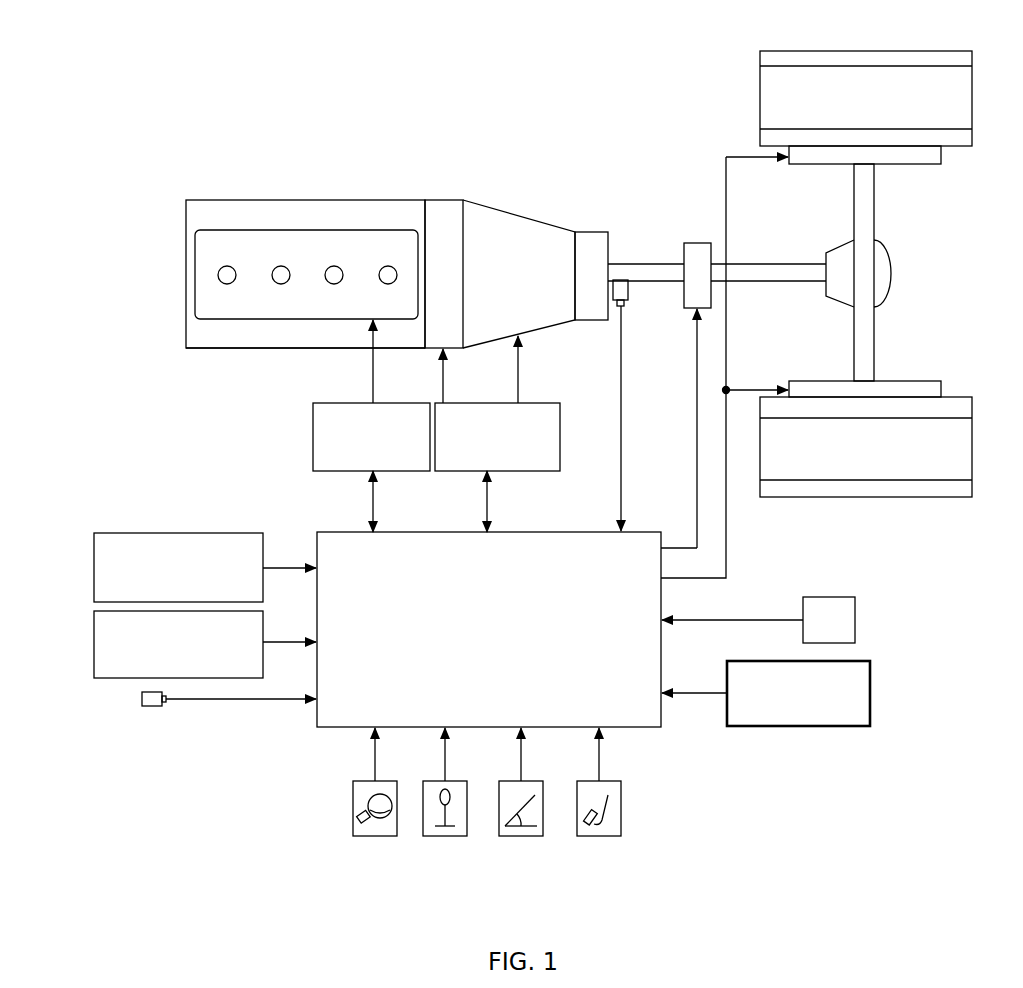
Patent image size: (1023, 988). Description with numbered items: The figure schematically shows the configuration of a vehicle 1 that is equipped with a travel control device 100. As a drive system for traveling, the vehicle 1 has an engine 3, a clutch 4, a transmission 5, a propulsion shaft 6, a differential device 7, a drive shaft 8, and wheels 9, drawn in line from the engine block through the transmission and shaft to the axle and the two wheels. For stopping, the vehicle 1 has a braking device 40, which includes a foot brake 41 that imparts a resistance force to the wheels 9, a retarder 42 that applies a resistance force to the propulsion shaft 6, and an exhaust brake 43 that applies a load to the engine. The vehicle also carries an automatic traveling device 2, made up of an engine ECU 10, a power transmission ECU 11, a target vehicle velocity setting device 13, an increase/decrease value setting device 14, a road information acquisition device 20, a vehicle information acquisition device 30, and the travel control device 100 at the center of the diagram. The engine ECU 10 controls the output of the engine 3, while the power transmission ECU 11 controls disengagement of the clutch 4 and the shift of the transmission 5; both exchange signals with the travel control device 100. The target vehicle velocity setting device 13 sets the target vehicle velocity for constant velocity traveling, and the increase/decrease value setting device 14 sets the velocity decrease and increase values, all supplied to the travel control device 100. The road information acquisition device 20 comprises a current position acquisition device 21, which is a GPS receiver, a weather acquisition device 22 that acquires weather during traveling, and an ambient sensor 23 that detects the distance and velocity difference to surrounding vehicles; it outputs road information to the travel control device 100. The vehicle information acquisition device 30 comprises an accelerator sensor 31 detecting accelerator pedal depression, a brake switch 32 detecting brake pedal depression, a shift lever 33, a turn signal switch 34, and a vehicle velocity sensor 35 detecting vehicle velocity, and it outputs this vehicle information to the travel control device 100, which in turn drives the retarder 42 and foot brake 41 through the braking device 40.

The vehicle 1 is at (183, 178).
The automatic traveling device 2 is at (638, 741).
The engine 3 is at (311, 200).
The clutch 4 is at (445, 200).
The transmission 5 is at (524, 216).
The propulsion shaft 6 is at (764, 264).
The differential device 7 is at (892, 273).
The drive shaft 8 is at (876, 195).
The wheels 9 is at (956, 397).
The engine ECU 10 is at (313, 440).
The power transmission ECU 11 is at (560, 440).
The target vehicle velocity setting device 13 is at (857, 620).
The increase/decrease value setting device 14 is at (872, 693).
The road information acquisition device 20 is at (101, 520).
The current position acquisition device 21 is at (94, 568).
The weather acquisition device 22 is at (94, 642).
The ambient sensor 23 is at (142, 699).
The vehicle information acquisition device 30 is at (338, 808).
The accelerator sensor 31 is at (522, 838).
The brake switch 32 is at (600, 838).
The shift lever 33 is at (446, 838).
The turn signal switch 34 is at (378, 838).
The vehicle velocity sensor 35 is at (628, 296).
The braking device 40 is at (700, 168).
The foot brake 41 is at (815, 167).
The retarder 42 is at (697, 243).
The exhaust brake 43 is at (199, 350).
The travel control device 100 is at (588, 532).